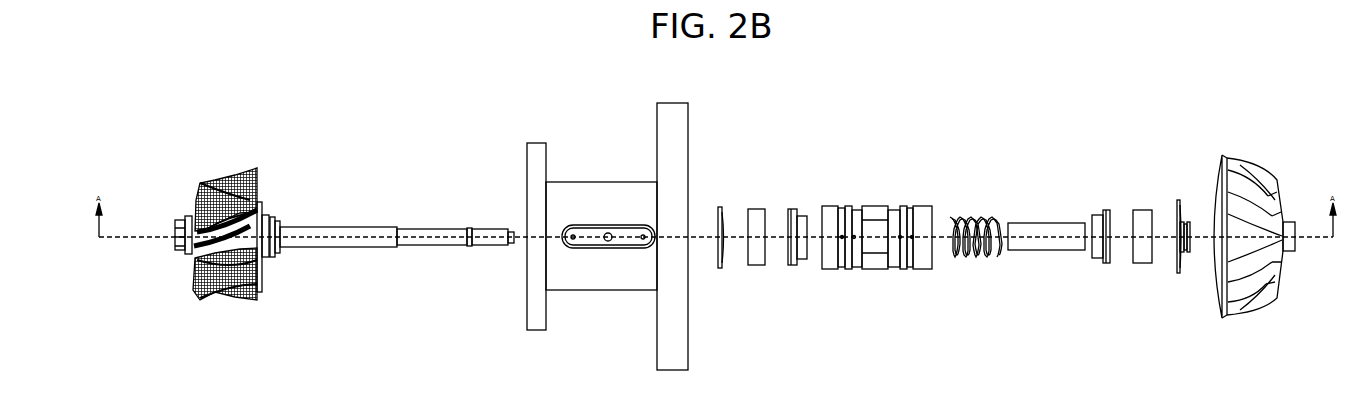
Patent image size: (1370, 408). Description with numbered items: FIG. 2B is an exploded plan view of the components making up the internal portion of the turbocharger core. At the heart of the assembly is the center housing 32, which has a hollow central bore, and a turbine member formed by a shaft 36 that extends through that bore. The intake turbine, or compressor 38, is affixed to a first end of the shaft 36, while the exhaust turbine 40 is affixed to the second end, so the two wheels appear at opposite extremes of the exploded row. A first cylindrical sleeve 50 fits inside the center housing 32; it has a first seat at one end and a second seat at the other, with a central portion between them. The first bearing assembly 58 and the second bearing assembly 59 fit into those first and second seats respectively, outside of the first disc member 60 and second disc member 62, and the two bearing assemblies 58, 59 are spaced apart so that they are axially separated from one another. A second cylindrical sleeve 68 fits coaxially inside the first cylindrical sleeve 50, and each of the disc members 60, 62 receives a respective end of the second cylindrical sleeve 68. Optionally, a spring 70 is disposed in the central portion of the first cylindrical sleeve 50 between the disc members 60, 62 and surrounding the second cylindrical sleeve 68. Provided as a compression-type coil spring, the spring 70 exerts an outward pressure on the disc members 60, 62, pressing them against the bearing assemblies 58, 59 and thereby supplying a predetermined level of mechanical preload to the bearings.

The center housing 32 is at (605, 297).
The shaft 36 is at (322, 247).
The intake turbine (compressor) 38 is at (1252, 302).
The exhaust turbine 40 is at (217, 293).
The first cylindrical sleeve 50 is at (890, 273).
The first bearing assembly 58 is at (758, 270).
The second bearing assembly 59 is at (1145, 268).
The first disc member 60 is at (800, 267).
The second disc member 62 is at (1100, 265).
The second cylindrical sleeve 68 is at (1048, 258).
The spring 70 is at (971, 265).